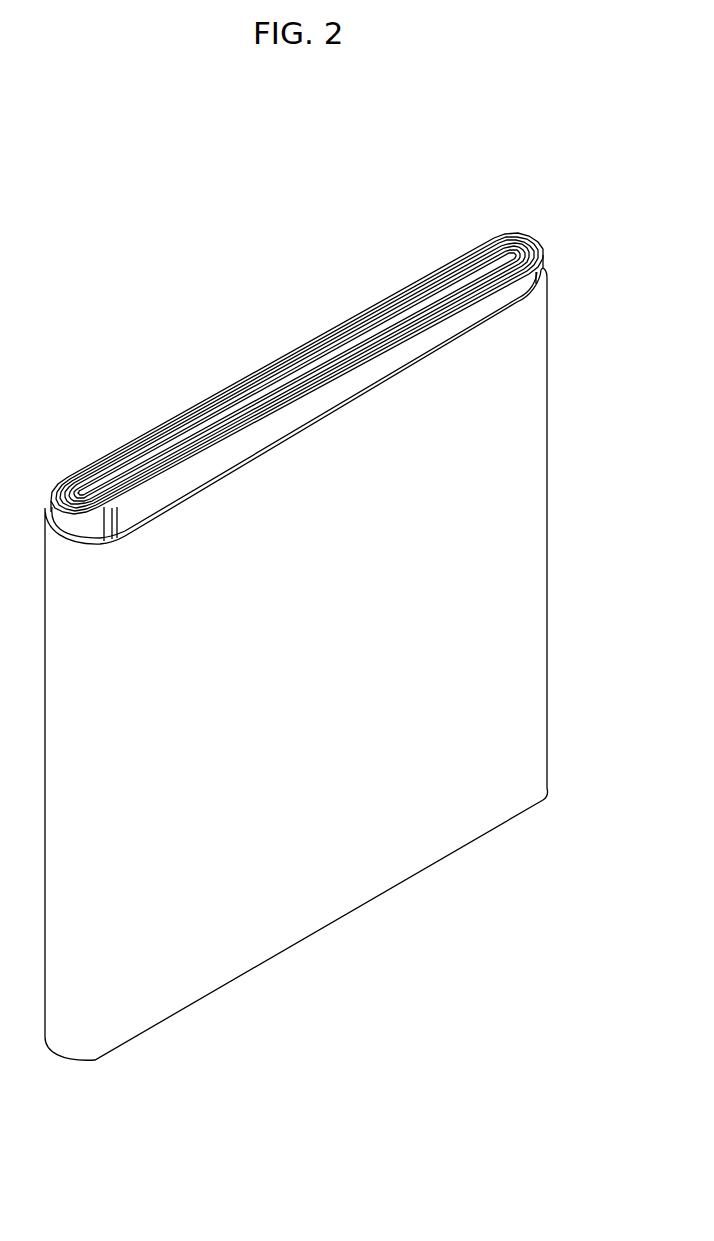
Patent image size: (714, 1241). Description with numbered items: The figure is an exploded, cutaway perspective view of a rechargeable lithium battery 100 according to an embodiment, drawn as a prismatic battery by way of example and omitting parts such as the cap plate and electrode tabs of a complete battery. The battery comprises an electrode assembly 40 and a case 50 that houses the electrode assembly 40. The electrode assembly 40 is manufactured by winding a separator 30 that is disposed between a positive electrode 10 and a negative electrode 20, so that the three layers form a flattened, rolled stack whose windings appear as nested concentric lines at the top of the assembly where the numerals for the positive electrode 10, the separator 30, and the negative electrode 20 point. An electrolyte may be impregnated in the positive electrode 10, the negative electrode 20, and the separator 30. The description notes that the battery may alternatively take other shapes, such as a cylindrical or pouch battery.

The rechargeable lithium battery 100 is at (277, 146).
The positive electrode 10 is at (539, 239).
The negative electrode 20 is at (497, 243).
The separator 30 is at (522, 234).
The electrode assembly 40 is at (272, 332).
The case 50 is at (535, 522).